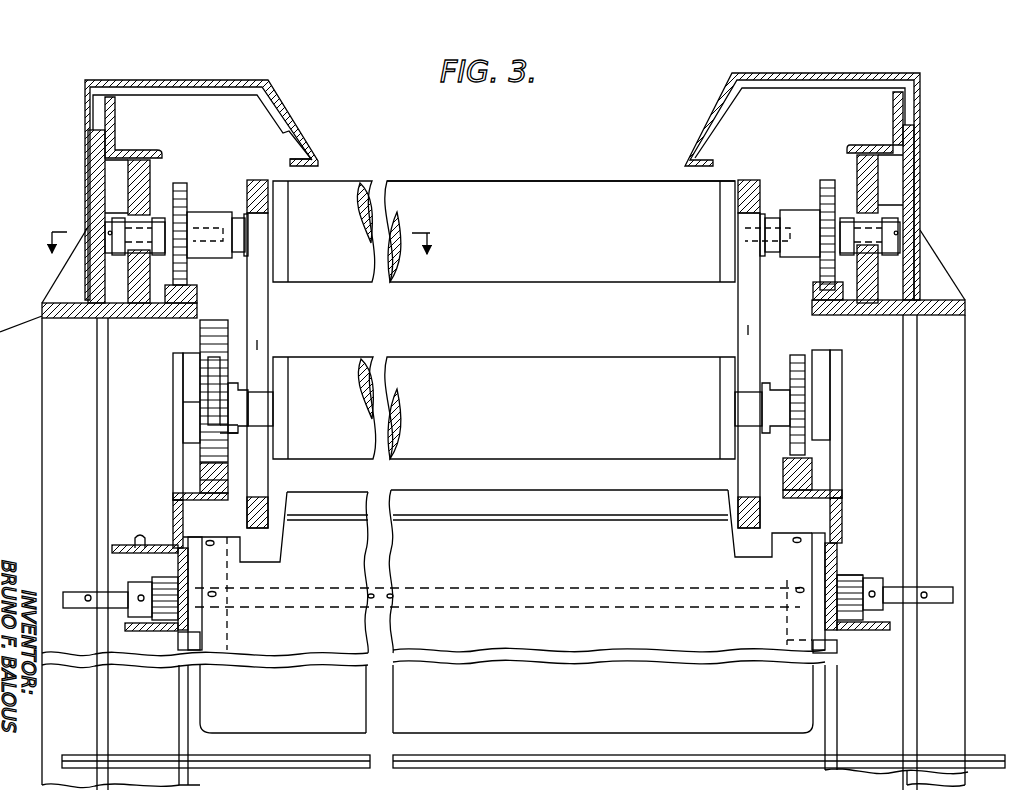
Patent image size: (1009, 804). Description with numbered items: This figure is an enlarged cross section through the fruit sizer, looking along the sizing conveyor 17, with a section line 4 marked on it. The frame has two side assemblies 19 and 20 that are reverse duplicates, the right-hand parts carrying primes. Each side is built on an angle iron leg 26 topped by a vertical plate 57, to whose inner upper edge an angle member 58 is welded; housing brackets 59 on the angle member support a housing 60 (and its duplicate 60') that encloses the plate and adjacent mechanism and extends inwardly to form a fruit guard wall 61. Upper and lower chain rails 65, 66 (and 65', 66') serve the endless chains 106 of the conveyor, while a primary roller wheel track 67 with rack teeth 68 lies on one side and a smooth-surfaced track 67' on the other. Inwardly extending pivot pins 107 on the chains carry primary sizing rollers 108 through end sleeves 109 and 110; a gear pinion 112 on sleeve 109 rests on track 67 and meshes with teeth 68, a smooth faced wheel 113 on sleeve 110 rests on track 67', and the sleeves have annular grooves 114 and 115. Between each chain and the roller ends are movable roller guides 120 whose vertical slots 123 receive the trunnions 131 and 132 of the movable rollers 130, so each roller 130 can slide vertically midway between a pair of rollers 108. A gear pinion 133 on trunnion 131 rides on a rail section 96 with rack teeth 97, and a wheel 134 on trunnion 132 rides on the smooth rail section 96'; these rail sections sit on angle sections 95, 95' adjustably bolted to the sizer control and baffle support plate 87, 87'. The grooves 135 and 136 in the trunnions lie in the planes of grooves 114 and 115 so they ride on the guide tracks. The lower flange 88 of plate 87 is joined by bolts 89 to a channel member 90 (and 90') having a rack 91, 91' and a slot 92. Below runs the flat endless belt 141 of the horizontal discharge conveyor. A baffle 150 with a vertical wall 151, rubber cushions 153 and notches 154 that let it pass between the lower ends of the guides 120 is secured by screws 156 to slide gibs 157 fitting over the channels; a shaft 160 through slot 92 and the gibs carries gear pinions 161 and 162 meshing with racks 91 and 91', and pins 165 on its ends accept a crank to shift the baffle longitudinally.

The section line 4- 4 is at (235, 234).
The sizing conveyor 17 is at (512, 172).
The side assembly 19 is at (80, 197).
The side assembly 20 is at (928, 183).
The angle iron leg 26 is at (120, 368).
The vertical plate 57 is at (88, 140).
The angle member 58 is at (112, 128).
The housing brackets 59 is at (183, 91).
The housing 60 is at (201, 166).
The housing 60' is at (802, 164).
The fruit guard wall 61 is at (316, 150).
The upper chain rail 65 is at (157, 183).
The upper chain rail 65' is at (881, 229).
The lower chain rail 66 is at (119, 292).
The lower chain rail 66' is at (905, 277).
The primary roller wheel track 67 is at (196, 292).
The primary roller wheel track 67' is at (806, 292).
The rack teeth 68 is at (128, 287).
The sizer control and baffle support plate 87 is at (155, 426).
The sizer control and baffle support plate 87' is at (856, 424).
The lower flange 88 is at (158, 545).
The bolts 89 is at (150, 566).
The channel member 90 is at (149, 657).
The channel member 90' is at (863, 634).
The rack 91 is at (201, 584).
The rack 91' is at (813, 586).
The slot 92 is at (176, 599).
The angle sections 95 is at (184, 450).
The angle sections 95' is at (835, 446).
The rail section 96 is at (202, 482).
The rail section 96' is at (809, 472).
The rack teeth 97 is at (204, 466).
The endless chains 106 is at (112, 245).
The pivot pins 107 is at (193, 228).
The primary sizing rollers 108 is at (562, 192).
The sleeve 109 is at (237, 207).
The sleeve 110 is at (798, 210).
The gear pinion 112 is at (185, 183).
The smooth faced wheel 113 is at (850, 178).
The annular groove 114 is at (212, 246).
The annular groove 115 is at (768, 262).
The movable roller guides 120 is at (270, 322).
The vertical slot 123 is at (258, 345).
The movable rollers 130 is at (585, 372).
The trunnion 131 is at (258, 400).
The trunnion 132 is at (750, 395).
The gear pinion 133 is at (210, 390).
The wheel 134 is at (795, 407).
The groove 135 is at (234, 433).
The groove 136 is at (772, 433).
The flat endless belt 141 is at (592, 758).
The baffles 150 is at (792, 687).
The vertical wall 151 is at (548, 697).
The rubber cushions 153 is at (448, 508).
The notches 154 is at (279, 541).
The screws 156 is at (797, 588).
The slide gibs 157 is at (200, 638).
The shaft 160 is at (925, 588).
The gear pinion 161 is at (190, 590).
The gear pinion 162 is at (860, 586).
The pins 165 is at (88, 601).